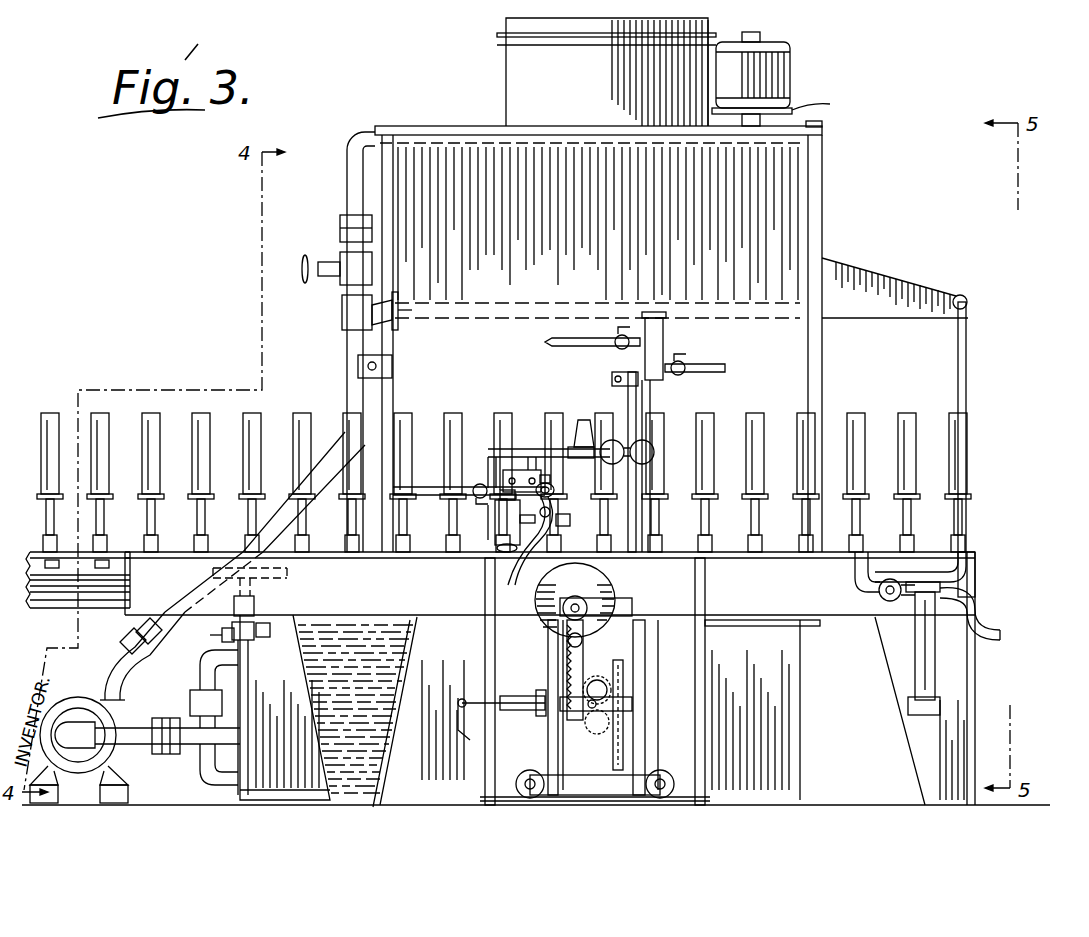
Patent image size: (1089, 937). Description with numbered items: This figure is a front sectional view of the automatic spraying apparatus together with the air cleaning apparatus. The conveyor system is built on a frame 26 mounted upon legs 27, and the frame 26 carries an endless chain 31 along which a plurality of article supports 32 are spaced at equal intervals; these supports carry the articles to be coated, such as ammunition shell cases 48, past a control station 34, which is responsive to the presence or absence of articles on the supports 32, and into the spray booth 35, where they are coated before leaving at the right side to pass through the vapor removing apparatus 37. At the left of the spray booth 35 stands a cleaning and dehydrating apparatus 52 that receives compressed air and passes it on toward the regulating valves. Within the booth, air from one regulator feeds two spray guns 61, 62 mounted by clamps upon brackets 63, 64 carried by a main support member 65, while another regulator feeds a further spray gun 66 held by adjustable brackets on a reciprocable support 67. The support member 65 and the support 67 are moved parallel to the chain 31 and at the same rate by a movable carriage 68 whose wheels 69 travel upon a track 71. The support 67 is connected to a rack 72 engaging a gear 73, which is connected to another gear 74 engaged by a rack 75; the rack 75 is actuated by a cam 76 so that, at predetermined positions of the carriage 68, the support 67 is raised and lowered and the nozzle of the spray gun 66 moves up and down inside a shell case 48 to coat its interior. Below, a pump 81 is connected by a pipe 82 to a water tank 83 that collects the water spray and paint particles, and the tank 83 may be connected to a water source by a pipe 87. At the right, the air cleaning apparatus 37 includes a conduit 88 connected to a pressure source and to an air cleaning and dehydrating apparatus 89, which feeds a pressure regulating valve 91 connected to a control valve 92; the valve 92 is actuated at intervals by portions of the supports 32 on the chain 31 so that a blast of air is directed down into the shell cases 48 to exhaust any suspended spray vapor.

The frame 26 is at (978, 588).
The legs 27 is at (950, 760).
The endless chain 31 is at (60, 590).
The article supports 32 is at (147, 518).
The control station 34 is at (285, 585).
The spray booth 35 is at (800, 180).
The vapor removing apparatus 37 is at (920, 298).
The ammunition shell cases 48 is at (44, 432).
The cleaning and dehydrating apparatus 52 is at (368, 394).
The spray gun 61 is at (545, 500).
The spray gun 62 is at (495, 522).
The bracket 63 is at (530, 455).
The bracket 64 is at (488, 450).
The main support member 65 is at (570, 521).
The spray gun 66 is at (665, 334).
The reciprocable support 67 is at (628, 402).
The movable carriage 68 is at (647, 674).
The wheels 69 is at (530, 770).
The track 71 is at (716, 792).
The rack 72 is at (612, 722).
The gear 73 is at (623, 738).
The gear 74 is at (600, 684).
The rack 75 is at (566, 660).
The cam 76 is at (560, 622).
The pump 81 is at (68, 720).
The pipe 82 is at (133, 732).
The water tank 83 is at (282, 680).
The pipe 87 is at (222, 634).
The conduit 88 is at (992, 630).
The air cleaning and dehydrating apparatus 89 is at (765, 86).
The pressure regulating valve 91 is at (888, 600).
The control valve 92 is at (860, 594).